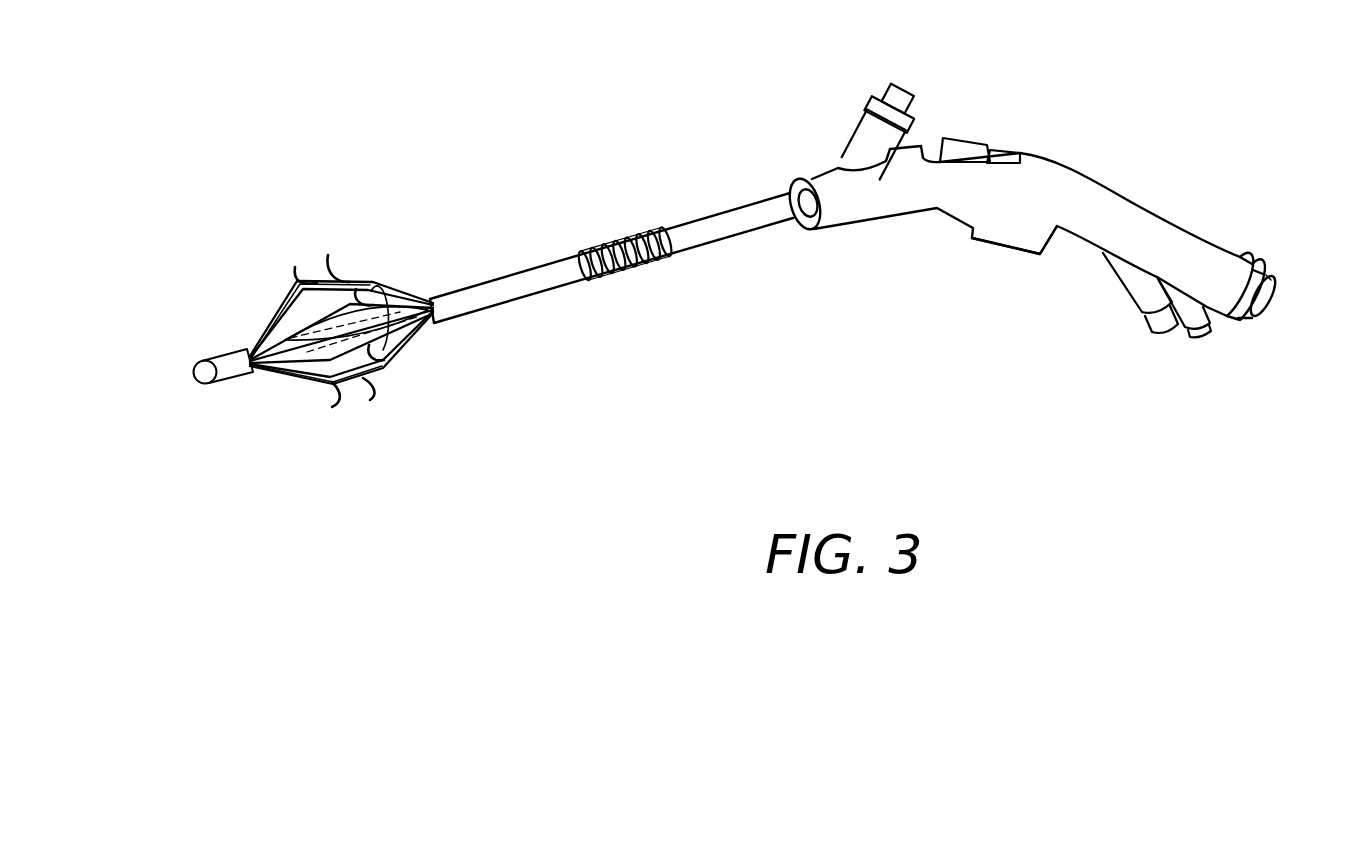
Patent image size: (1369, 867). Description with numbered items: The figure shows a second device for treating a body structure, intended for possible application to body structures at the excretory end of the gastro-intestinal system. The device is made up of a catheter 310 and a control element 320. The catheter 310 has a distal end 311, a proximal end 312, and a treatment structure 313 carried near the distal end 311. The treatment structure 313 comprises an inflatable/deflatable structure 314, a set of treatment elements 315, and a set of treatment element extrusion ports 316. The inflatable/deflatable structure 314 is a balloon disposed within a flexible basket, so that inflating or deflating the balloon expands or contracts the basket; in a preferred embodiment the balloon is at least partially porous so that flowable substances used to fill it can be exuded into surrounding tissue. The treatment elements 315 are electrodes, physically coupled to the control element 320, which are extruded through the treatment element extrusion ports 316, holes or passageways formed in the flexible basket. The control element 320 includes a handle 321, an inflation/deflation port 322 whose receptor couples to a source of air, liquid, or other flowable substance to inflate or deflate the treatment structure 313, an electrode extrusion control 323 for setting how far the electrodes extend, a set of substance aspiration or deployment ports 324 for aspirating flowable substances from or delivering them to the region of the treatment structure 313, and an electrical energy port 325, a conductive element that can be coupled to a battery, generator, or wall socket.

The catheter 310 is at (440, 366).
The distal end 311 is at (220, 362).
The proximal end 312 is at (503, 290).
The treatment structure 313 is at (355, 423).
The inflatable/deflatable structure 314 is at (310, 345).
The treatment elements 315 is at (368, 400).
The treatment element extrusion ports 316 is at (333, 407).
The control element 320 is at (873, 258).
The handle 321 is at (1083, 243).
The inflation/deflation port 322 is at (890, 92).
The electrode extrusion control 323 is at (957, 137).
The substance aspiration or deployment ports 324 is at (1172, 343).
The electrical energy port 325 is at (1267, 312).